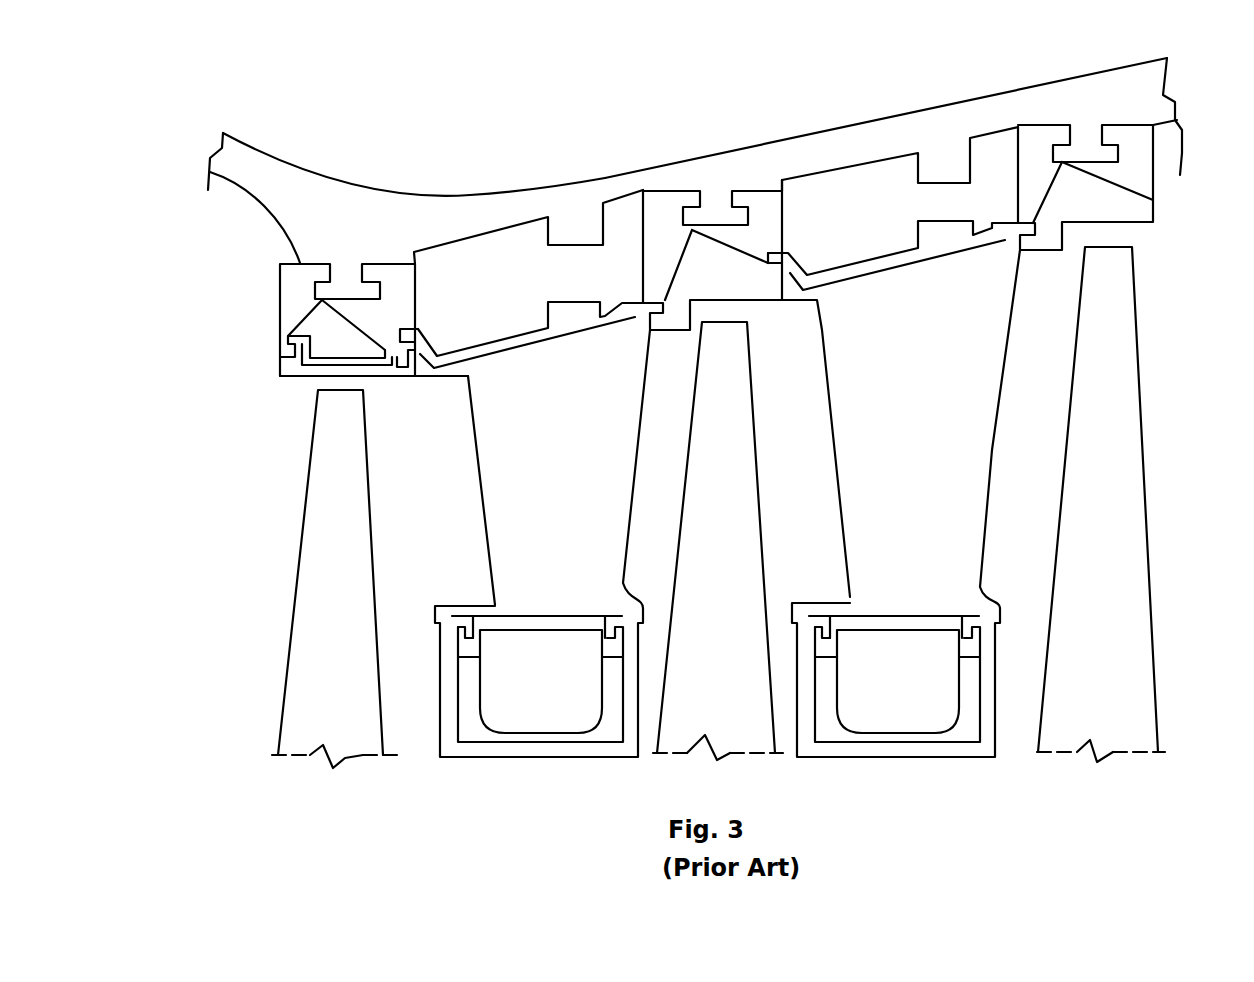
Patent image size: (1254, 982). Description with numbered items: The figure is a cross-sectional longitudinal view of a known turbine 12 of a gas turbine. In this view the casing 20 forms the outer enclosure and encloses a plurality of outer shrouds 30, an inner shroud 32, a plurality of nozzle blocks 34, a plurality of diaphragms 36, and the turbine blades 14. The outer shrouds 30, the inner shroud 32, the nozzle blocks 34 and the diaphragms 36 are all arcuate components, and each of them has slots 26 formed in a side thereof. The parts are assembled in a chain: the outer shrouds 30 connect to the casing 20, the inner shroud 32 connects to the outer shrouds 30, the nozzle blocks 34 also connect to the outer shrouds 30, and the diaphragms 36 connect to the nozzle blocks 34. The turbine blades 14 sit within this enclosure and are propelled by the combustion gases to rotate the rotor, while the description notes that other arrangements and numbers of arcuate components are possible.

The turbine 12 is at (196, 103).
The turbine blades 14 is at (295, 597).
The casing 20 is at (949, 100).
The slots 26 is at (1050, 215).
The outer shrouds 30 is at (282, 321).
The inner shroud 32 is at (290, 378).
The nozzle blocks 34 is at (518, 330).
The diaphragms 36 is at (506, 760).